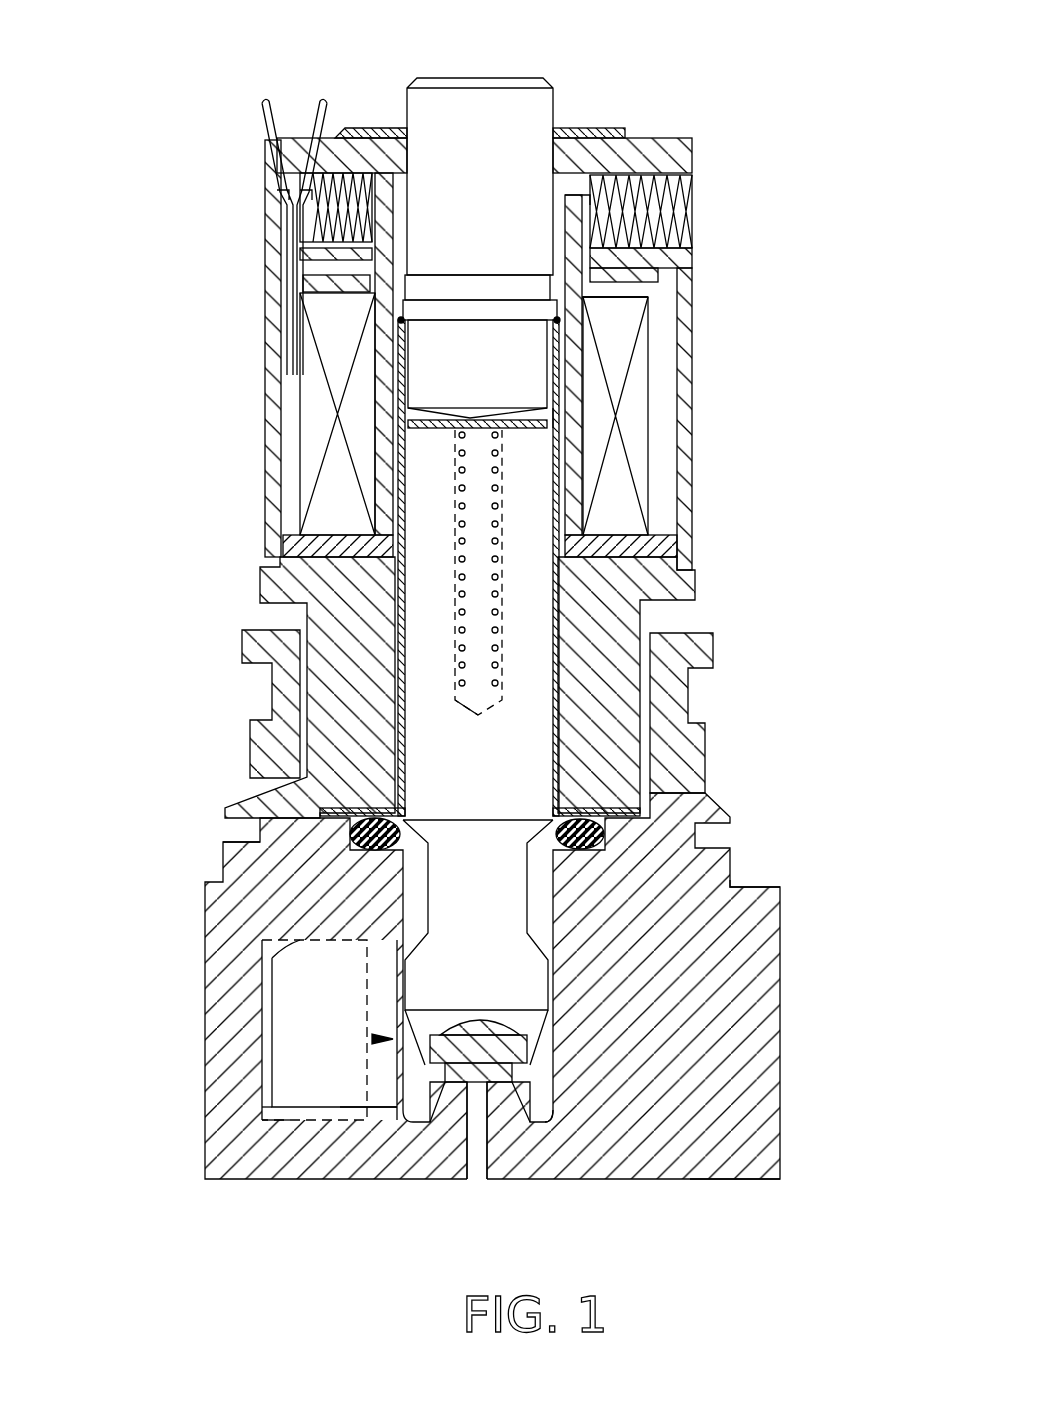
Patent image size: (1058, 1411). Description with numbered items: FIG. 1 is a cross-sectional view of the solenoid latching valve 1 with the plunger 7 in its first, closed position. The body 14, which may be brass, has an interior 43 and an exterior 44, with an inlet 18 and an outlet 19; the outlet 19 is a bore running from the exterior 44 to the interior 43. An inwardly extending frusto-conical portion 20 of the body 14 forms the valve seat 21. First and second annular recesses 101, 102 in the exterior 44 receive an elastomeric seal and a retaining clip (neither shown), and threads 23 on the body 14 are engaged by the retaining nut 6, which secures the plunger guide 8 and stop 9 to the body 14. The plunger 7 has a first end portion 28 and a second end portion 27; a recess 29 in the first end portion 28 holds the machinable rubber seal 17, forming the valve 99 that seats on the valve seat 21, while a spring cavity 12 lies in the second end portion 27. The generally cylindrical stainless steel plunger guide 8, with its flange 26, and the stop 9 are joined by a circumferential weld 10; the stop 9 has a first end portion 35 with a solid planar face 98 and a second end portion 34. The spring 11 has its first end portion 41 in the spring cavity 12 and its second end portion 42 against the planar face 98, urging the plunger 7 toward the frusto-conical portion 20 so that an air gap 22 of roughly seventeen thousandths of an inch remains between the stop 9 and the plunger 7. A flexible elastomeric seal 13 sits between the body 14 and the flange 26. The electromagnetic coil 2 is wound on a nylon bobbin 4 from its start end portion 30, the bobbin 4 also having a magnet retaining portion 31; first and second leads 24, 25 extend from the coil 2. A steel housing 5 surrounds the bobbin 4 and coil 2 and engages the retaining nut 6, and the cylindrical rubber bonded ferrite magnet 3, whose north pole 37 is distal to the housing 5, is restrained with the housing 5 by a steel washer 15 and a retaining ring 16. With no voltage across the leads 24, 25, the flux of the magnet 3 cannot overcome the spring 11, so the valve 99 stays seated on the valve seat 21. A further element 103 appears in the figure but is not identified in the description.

The solenoid latching valve 1 is at (198, 324).
The electromagnetic coil 2 is at (612, 438).
The magnet 3 is at (700, 232).
The bobbin 4 is at (573, 330).
The housing 5 is at (660, 272).
The retaining nut 6 is at (645, 590).
The plunger 7 is at (470, 760).
The plunger guide 8 is at (560, 385).
The stop 9 is at (410, 318).
The weld 10 is at (405, 330).
The spring 11 is at (410, 420).
The spring cavity 12 is at (455, 580).
The flexible elastomeric seal 13 is at (730, 887).
The body 14 is at (700, 995).
The steel washer 15 is at (656, 132).
The retaining ring 16 is at (575, 125).
The seal 17 is at (480, 1050).
The inlet 18 is at (297, 997).
The outlet 19 is at (470, 1165).
The frusto-conical portion 20 is at (520, 1120).
The valve seat 21 is at (490, 1130).
The air gap 22 is at (580, 480).
The threads 23 is at (690, 690).
The first lead 24 is at (265, 128).
The second lead 25 is at (327, 112).
The flange 26 is at (700, 838).
The second end portion 27 is at (400, 448).
The first end portion 28 is at (372, 1040).
The recess 29 is at (300, 1130).
The start end portion 30 is at (600, 565).
The magnet retaining portion 31 is at (578, 225).
The second end portion 34 is at (478, 113).
The first end portion 35 is at (415, 410).
The north pole 37 is at (640, 160).
The first end portion 41 is at (455, 686).
The second end portion 42 is at (410, 375).
The interior 43 is at (365, 1088).
The exterior 44 is at (690, 1180).
The solid planar face 98 is at (555, 422).
The valve 99 is at (305, 1030).
The first annular recess 101 is at (245, 655).
The second annular recess 102 is at (225, 832).
The port outline 103 is at (300, 966).